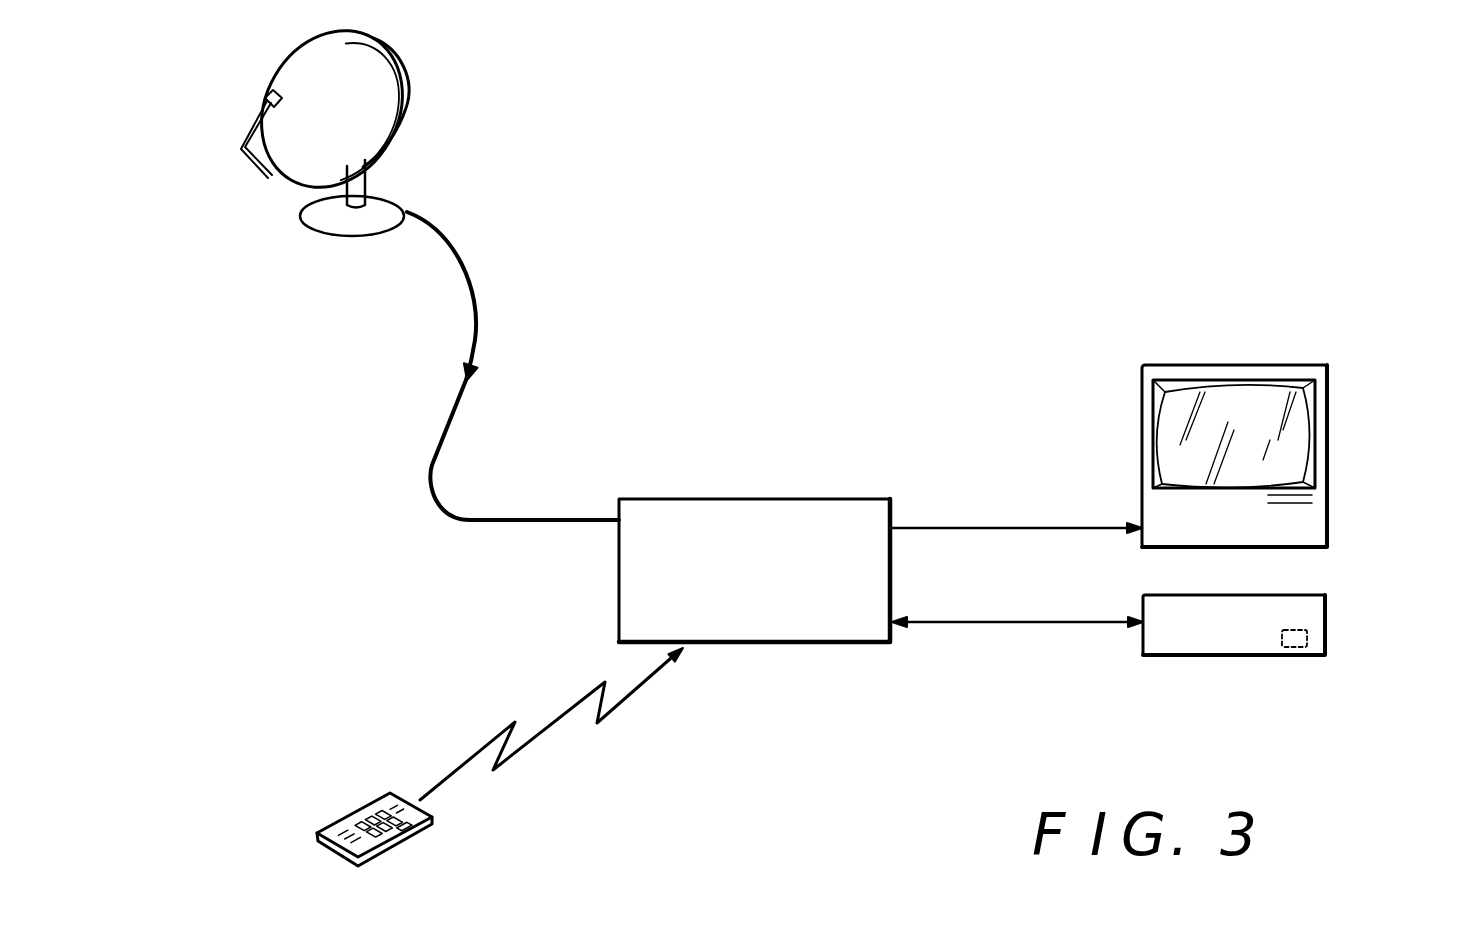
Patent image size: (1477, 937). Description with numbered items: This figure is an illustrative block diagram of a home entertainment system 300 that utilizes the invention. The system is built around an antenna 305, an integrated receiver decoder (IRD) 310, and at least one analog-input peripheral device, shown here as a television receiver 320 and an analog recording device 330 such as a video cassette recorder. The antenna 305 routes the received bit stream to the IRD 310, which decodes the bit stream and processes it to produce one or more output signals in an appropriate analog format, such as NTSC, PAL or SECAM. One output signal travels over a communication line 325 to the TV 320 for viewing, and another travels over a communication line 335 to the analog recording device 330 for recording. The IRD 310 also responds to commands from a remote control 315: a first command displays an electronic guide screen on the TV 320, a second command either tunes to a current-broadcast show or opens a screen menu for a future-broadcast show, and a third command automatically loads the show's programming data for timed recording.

The home entertainment system 300 is at (372, 636).
The antenna 305 is at (412, 143).
The integrated receiver decoder (IRD) 310 is at (700, 508).
The remote control 315 is at (400, 833).
The television receiver (TV) 320 is at (1328, 440).
The communication line 325 is at (980, 527).
The analog recording device (VCR) 330 is at (1318, 620).
The communication line 335 is at (1022, 623).